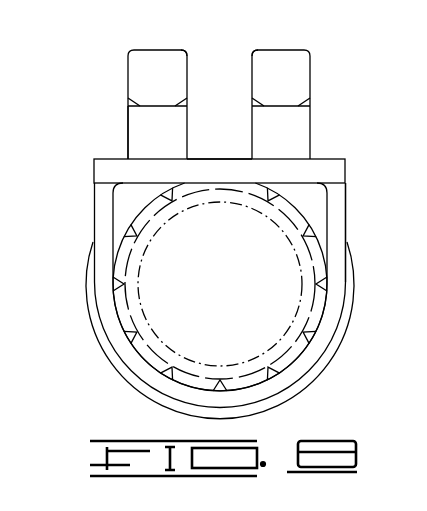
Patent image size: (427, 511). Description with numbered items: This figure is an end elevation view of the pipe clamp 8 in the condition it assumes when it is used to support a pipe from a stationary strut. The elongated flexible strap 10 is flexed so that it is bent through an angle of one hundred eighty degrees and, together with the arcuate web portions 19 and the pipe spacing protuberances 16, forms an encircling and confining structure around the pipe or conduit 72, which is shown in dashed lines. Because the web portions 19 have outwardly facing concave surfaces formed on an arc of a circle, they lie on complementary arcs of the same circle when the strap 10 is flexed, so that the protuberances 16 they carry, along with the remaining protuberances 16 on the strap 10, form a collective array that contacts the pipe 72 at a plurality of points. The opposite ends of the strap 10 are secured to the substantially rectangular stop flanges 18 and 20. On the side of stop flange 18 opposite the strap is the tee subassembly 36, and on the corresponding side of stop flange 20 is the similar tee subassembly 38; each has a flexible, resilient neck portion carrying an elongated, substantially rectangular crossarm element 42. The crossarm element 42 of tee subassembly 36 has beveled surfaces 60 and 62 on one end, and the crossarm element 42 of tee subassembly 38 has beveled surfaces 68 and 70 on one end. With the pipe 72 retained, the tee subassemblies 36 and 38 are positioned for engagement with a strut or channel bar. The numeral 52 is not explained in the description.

The pipe clamp 8 is at (356, 180).
The elongated flexible strap 10 is at (312, 373).
The pipe spacing protuberances 16 is at (330, 281).
The stop flange 18 is at (262, 172).
The arcuate web portions 19 is at (118, 202).
The stop flange 20 is at (104, 173).
The tee subassembly 36 is at (320, 93).
The tee subassembly 38 is at (122, 56).
The crossarm element 42 is at (248, 46).
The post lower portion 52 is at (117, 132).
The beveled surface 60 is at (253, 106).
The beveled surface 62 is at (312, 105).
The beveled surface 68 is at (183, 102).
The beveled surface 70 is at (132, 103).
The pipe or conduit 72 is at (297, 253).